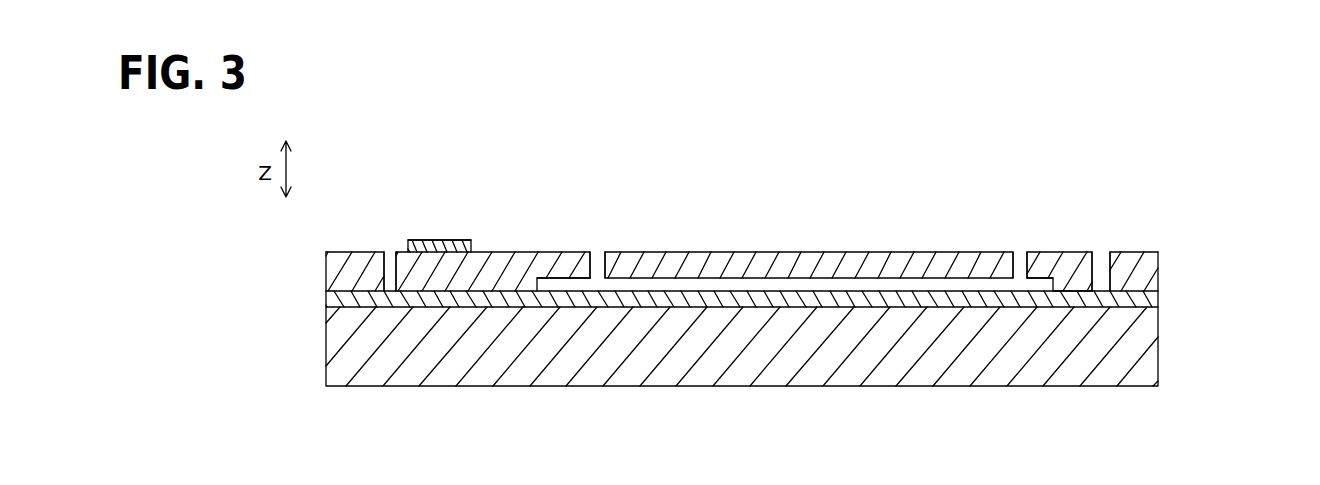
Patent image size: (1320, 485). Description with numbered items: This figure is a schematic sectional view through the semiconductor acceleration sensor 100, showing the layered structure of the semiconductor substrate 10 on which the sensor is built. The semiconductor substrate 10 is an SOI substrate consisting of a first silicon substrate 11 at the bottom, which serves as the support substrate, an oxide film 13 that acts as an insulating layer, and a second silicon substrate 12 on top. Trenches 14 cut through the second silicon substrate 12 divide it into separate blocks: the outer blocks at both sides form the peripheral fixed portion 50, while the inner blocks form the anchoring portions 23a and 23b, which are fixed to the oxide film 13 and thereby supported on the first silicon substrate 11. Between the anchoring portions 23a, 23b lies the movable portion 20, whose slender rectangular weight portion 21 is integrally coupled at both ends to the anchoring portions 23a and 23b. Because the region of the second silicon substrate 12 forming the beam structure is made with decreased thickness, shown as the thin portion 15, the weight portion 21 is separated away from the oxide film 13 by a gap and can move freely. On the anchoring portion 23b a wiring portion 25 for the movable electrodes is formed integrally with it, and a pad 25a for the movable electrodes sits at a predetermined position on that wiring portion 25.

The semiconductor acceleration sensor 100 is at (1160, 235).
The semiconductor substrate 10 is at (1236, 258).
The first silicon substrate 11 is at (1148, 328).
The second silicon substrate 12 is at (1159, 274).
The oxide film 13 is at (1152, 302).
The trenches 14 is at (388, 262).
The thin portion 15 is at (710, 279).
The movable portion 20 is at (848, 250).
The weight portion 21 is at (782, 252).
The anchoring portion 23a is at (1078, 251).
The anchoring portion 23b is at (535, 251).
The wiring portion for movable electrodes 25 is at (482, 250).
The pad for movable electrodes 25a is at (440, 239).
The peripheral fixed portion 50 is at (326, 252).